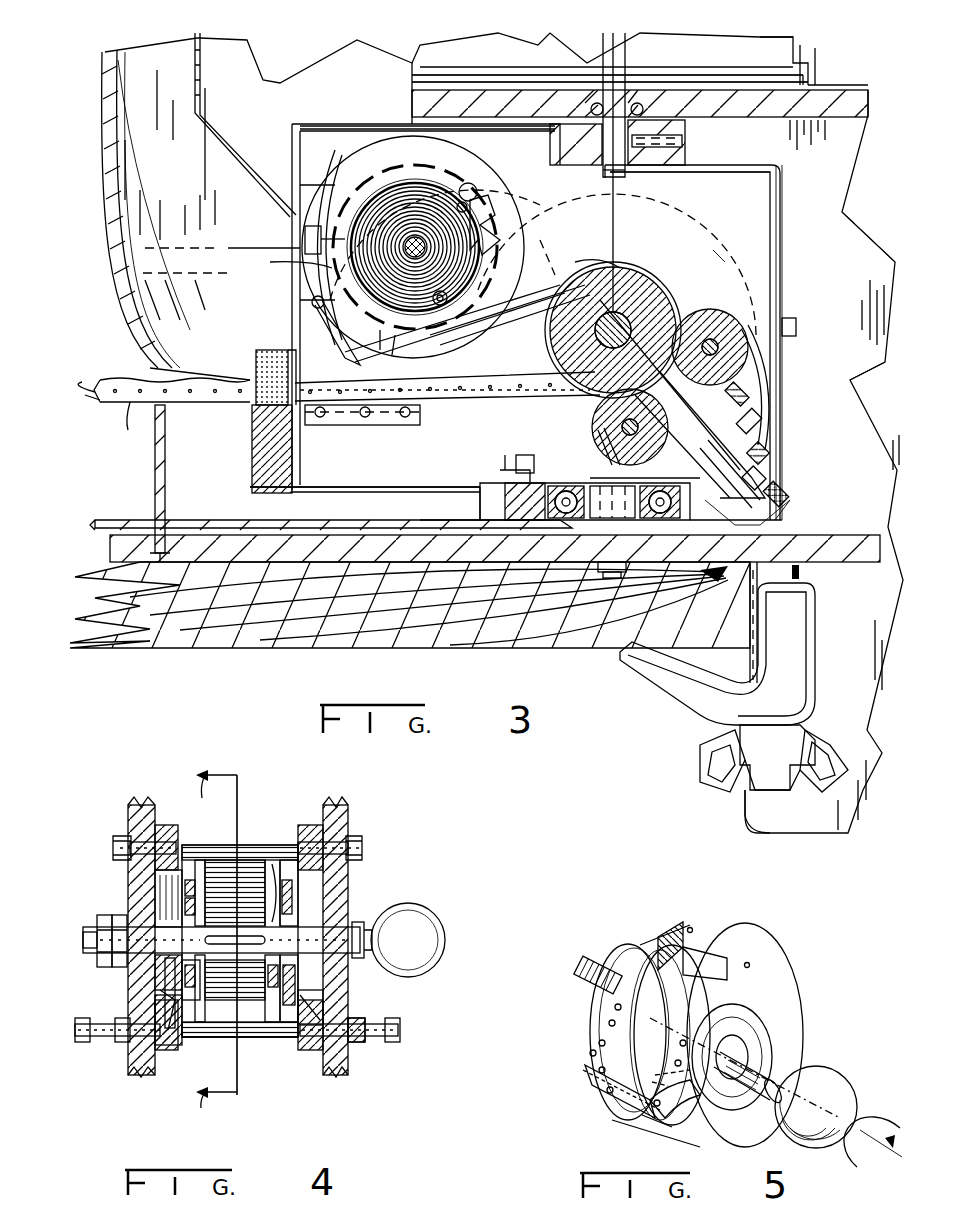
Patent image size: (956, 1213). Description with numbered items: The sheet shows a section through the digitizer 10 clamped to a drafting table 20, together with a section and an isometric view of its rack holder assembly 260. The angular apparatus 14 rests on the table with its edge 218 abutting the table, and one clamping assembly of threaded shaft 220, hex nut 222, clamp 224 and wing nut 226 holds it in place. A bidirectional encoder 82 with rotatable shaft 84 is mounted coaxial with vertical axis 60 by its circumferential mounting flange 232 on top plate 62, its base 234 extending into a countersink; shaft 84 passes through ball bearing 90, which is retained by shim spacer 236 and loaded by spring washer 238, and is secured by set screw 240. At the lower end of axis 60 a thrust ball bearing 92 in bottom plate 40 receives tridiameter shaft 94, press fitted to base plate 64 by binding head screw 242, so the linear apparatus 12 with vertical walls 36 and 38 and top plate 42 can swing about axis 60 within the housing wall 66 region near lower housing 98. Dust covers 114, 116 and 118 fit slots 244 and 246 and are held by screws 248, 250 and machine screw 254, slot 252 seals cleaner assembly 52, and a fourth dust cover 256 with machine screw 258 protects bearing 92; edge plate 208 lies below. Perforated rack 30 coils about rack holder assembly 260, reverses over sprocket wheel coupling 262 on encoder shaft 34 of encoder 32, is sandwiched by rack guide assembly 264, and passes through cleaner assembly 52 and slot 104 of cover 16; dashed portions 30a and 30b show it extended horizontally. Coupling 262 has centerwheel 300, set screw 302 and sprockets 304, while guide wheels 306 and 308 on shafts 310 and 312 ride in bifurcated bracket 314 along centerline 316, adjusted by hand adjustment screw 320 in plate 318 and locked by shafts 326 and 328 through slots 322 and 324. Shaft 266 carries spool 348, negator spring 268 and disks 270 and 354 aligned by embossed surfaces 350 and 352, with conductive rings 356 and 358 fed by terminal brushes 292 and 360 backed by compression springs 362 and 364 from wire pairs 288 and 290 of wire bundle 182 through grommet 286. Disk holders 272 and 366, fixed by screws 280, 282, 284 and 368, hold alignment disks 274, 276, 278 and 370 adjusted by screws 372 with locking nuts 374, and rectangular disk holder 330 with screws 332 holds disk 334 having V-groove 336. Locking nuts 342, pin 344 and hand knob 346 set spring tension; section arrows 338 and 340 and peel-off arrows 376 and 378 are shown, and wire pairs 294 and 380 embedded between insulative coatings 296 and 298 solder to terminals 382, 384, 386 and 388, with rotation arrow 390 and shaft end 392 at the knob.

In FIG. 3, the digitizer 10 is at (100, 102).
In FIG. 3, the linear apparatus 12 is at (790, 290).
In FIG. 3, the angular apparatus 14 is at (868, 85).
In FIG. 3, the cover 16 is at (105, 165).
In FIG. 3, the table 20 is at (308, 648).
In FIG. 3, the perforated rack 30 is at (140, 378).
In FIG. 4, the perforated rack 30 is at (270, 1038).
In FIG. 5, the perforated rack 30 is at (715, 935).
In FIG. 3, the rack portion 30a is at (557, 249).
In FIG. 3, the rack portion 30b is at (176, 195).
In FIG. 3, the encoder 32 is at (730, 225).
In FIG. 3, the encoder shaft 34 is at (555, 322).
In FIG. 3, the vertical wall 36 is at (762, 342).
In FIG. 4, the vertical wall 36 is at (128, 808).
In FIG. 4, the vertical wall 38 is at (350, 808).
In FIG. 3, the bottom plate 40 is at (592, 501).
In FIG. 3, the top plate 42 is at (576, 144).
In FIG. 3, the cleaner assembly 52 is at (252, 460).
In FIG. 3, the vertical axis 60 is at (617, 267).
In FIG. 3, the top plate 62 is at (805, 118).
In FIG. 3, the base plate 64 is at (155, 545).
In FIG. 3, the side wall 66 is at (851, 237).
In FIG. 3, the bidirectional encoder 82 is at (769, 61).
In FIG. 3, the rotatable shaft 84 is at (650, 175).
In FIG. 3, the ball bearing 90 is at (598, 108).
In FIG. 3, the thrust ball bearing 92 is at (525, 522).
In FIG. 3, the tridiameter shaft 94 is at (630, 530).
In FIG. 3, the lower housing 98 is at (799, 730).
In FIG. 3, the slot 104 is at (170, 410).
In FIG. 3, the dust cover 114 is at (290, 128).
In FIG. 3, the dust cover 116 is at (335, 492).
In FIG. 3, the dust cover 118 is at (782, 200).
In FIG. 3, the wire bundle 182 is at (310, 290).
In FIG. 3, the plate 208 is at (125, 520).
In FIG. 3, the edge 218 is at (750, 660).
In FIG. 3, the threaded shaft 220 is at (800, 572).
In FIG. 3, the hex nut 222 is at (810, 498).
In FIG. 3, the clamp 224 is at (650, 690).
In FIG. 3, the wing nut 226 is at (700, 745).
In FIG. 3, the circumferential mounting flange 232 is at (412, 72).
In FIG. 3, the encoder base 234 is at (418, 100).
In FIG. 3, the shim spacer 236 is at (645, 105).
In FIG. 3, the spring washer 238 is at (672, 122).
In FIG. 3, the set screw 240 is at (680, 148).
In FIG. 3, the binding head screw 242 is at (610, 580).
In FIG. 3, the slot 244 is at (548, 130).
In FIG. 3, the slot 246 is at (735, 181).
In FIG. 3, the screw 248 is at (272, 340).
In FIG. 3, the screw 250 is at (798, 330).
In FIG. 3, the slot 252 is at (285, 360).
In FIG. 3, the machine screw 254 is at (478, 510).
In FIG. 3, the dust cover 256 is at (520, 470).
In FIG. 3, the machine screw 258 is at (535, 448).
In FIG. 3, the rack holder assembly 260 is at (378, 152).
In FIG. 4, the rack holder assembly 260 is at (246, 812).
In FIG. 5, the rack holder assembly 260 is at (750, 942).
In FIG. 3, the sprocket wheel coupling 262 is at (665, 300).
In FIG. 3, the rack guide assembly 264 is at (697, 306).
In FIG. 3, the shaft 266 is at (489, 225).
In FIG. 4, the shaft 266 is at (330, 958).
In FIG. 3, the negator spring 268 is at (320, 240).
In FIG. 4, the negator spring 268 is at (200, 862).
In FIG. 5, the negator spring 268 is at (655, 975).
In FIG. 3, the disk 270 is at (425, 170).
In FIG. 4, the disk 270 is at (160, 880).
In FIG. 5, the disk 270 is at (590, 957).
In FIG. 3, the disk holder 272 is at (640, 210).
In FIG. 4, the disk holder 272 is at (168, 825).
In FIG. 3, the alignment disk 274 is at (260, 244).
In FIG. 3, the alignment disk 276 is at (475, 185).
In FIG. 3, the alignment disk 278 is at (455, 330).
In FIG. 4, the alignment disk 278 is at (170, 1050).
In FIG. 3, the screw 280 is at (325, 185).
In FIG. 4, the screw 280 is at (113, 845).
In FIG. 3, the screw 282 is at (490, 200).
In FIG. 3, the screw 284 is at (395, 340).
In FIG. 3, the grommet 286 is at (312, 302).
In FIG. 3, the pair of wires 288 is at (348, 329).
In FIG. 4, the pair of wires 288 is at (213, 988).
In FIG. 3, the pair of wires 290 is at (355, 358).
In FIG. 4, the pair of wires 290 is at (323, 1003).
In FIG. 3, the terminal brush 292 is at (457, 294).
In FIG. 4, the terminal brush 292 is at (165, 985).
In FIG. 3, the wire pair 294 is at (95, 395).
In FIG. 5, the wire pair 294 is at (600, 1078).
In FIG. 3, the insulative coating 296 is at (128, 410).
In FIG. 3, the insulative coating 298 is at (232, 368).
In FIG. 3, the centerwheel 300 is at (592, 280).
In FIG. 3, the set screw 302 is at (613, 330).
In FIG. 3, the sprockets 304 is at (600, 181).
In FIG. 3, the guide wheel 306 is at (770, 305).
In FIG. 3, the guide wheel 308 is at (605, 448).
In FIG. 3, the shaft 310 is at (700, 435).
In FIG. 3, the shaft 312 is at (592, 428).
In FIG. 3, the bifurcated bracket 314 is at (750, 395).
In FIG. 3, the centerline 316 is at (670, 385).
In FIG. 3, the plate 318 is at (775, 485).
In FIG. 3, the hand adjustment screw 320 is at (788, 490).
In FIG. 3, the slot 322 is at (764, 475).
In FIG. 3, the slot 324 is at (660, 470).
In FIG. 3, the shaft 326 is at (766, 450).
In FIG. 3, the shaft 328 is at (760, 418).
In FIG. 3, the rectangular disk holder 330 is at (408, 425).
In FIG. 3, the screws 332 is at (420, 414).
In FIG. 3, the disk 334 is at (345, 425).
In FIG. 3, the V-groove 336 is at (375, 430).
In FIG. 4, the section arrow 338 is at (212, 935).
In FIG. 4, the section arrow 340 is at (183, 1112).
In FIG. 4, the locking nuts 342 is at (90, 925).
In FIG. 4, the pin 344 is at (358, 922).
In FIG. 4, the hand knob 346 is at (422, 908).
In FIG. 5, the hand knob 346 is at (848, 1150).
In FIG. 4, the spool 348 is at (262, 862).
In FIG. 4, the embossed surface 350 is at (275, 862).
In FIG. 4, the embossed surface 352 is at (275, 985).
In FIG. 4, the disk 354 is at (298, 878).
In FIG. 5, the disk 354 is at (722, 1120).
In FIG. 4, the electrically conductive ring 356 is at (185, 888).
In FIG. 4, the electrically conductive ring 358 is at (185, 906).
In FIG. 4, the terminal brush 360 is at (155, 965).
In FIG. 4, the compression spring 362 is at (155, 1010).
In FIG. 4, the compression spring 364 is at (182, 975).
In FIG. 4, the disk holder 366 is at (312, 825).
In FIG. 4, the screw 368 is at (362, 845).
In FIG. 4, the disk 370 is at (312, 1050).
In FIG. 4, the screw 372 is at (400, 1038).
In FIG. 4, the locking nut 374 is at (356, 1042).
In FIG. 5, the arrow 376 is at (657, 983).
In FIG. 5, the arrow 378 is at (803, 997).
In FIG. 5, the pair of wires 380 is at (655, 1100).
In FIG. 5, the terminal 382 is at (612, 1005).
In FIG. 5, the terminal 384 is at (600, 1040).
In FIG. 5, the terminal 386 is at (660, 1105).
In FIG. 5, the terminal 388 is at (672, 1128).
In FIG. 5, the rotation 390 is at (872, 1122).
In FIG. 5, the shaft end 392 is at (822, 1098).